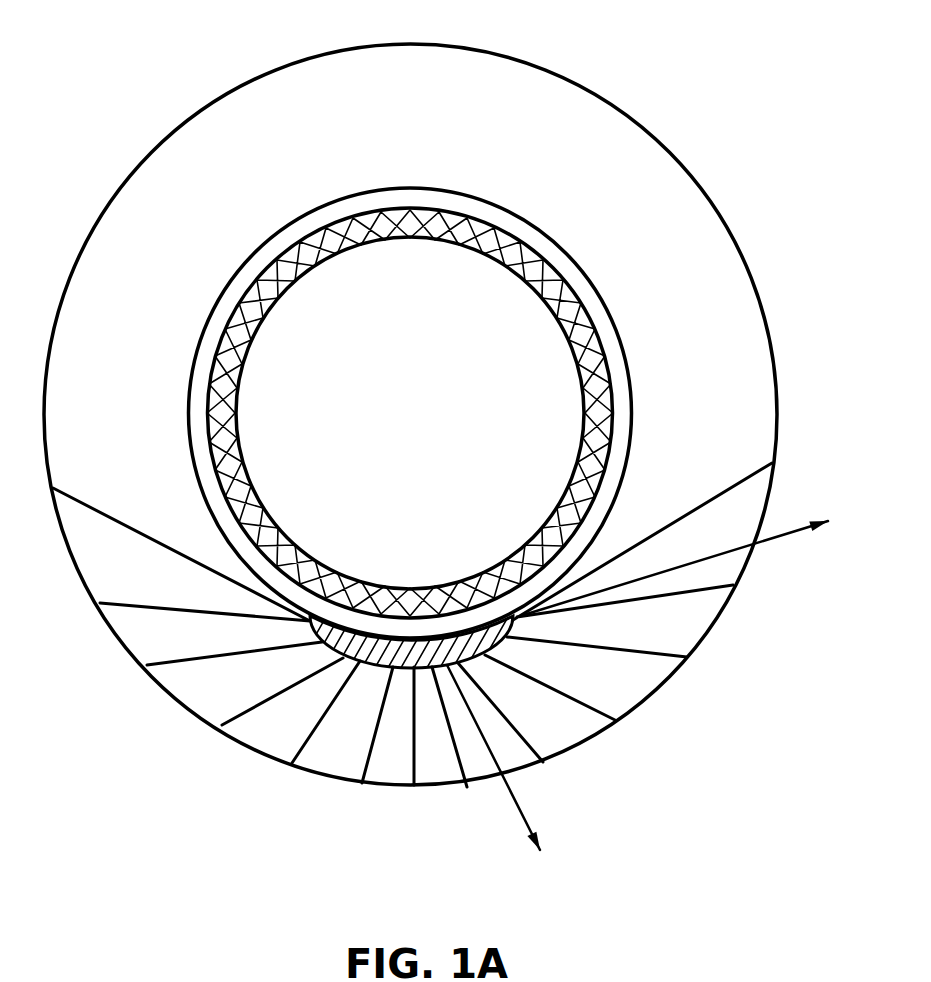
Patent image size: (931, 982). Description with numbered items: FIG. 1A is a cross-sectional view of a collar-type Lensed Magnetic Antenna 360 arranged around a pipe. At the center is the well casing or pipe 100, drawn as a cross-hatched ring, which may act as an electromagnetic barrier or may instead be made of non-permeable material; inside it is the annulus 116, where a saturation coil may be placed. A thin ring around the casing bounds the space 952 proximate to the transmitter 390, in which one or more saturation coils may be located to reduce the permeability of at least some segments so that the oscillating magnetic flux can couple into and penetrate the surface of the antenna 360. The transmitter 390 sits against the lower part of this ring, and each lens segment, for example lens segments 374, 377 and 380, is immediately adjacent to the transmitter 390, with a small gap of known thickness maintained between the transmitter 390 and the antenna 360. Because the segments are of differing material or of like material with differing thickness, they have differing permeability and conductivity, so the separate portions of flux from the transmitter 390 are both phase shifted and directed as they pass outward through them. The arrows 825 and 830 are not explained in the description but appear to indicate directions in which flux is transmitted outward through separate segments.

The Lensed Magnetic Antenna 360 is at (682, 88).
The space 952 is at (593, 334).
The well casing 100 is at (244, 482).
The annulus 116 is at (464, 402).
The lens segment 374 is at (224, 698).
The transmitter 390 is at (357, 662).
The lens segment 377 is at (396, 784).
The lens segment 380 is at (541, 727).
The downward arrow / direction 825 is at (513, 775).
The outward arrow / direction 830 is at (703, 561).